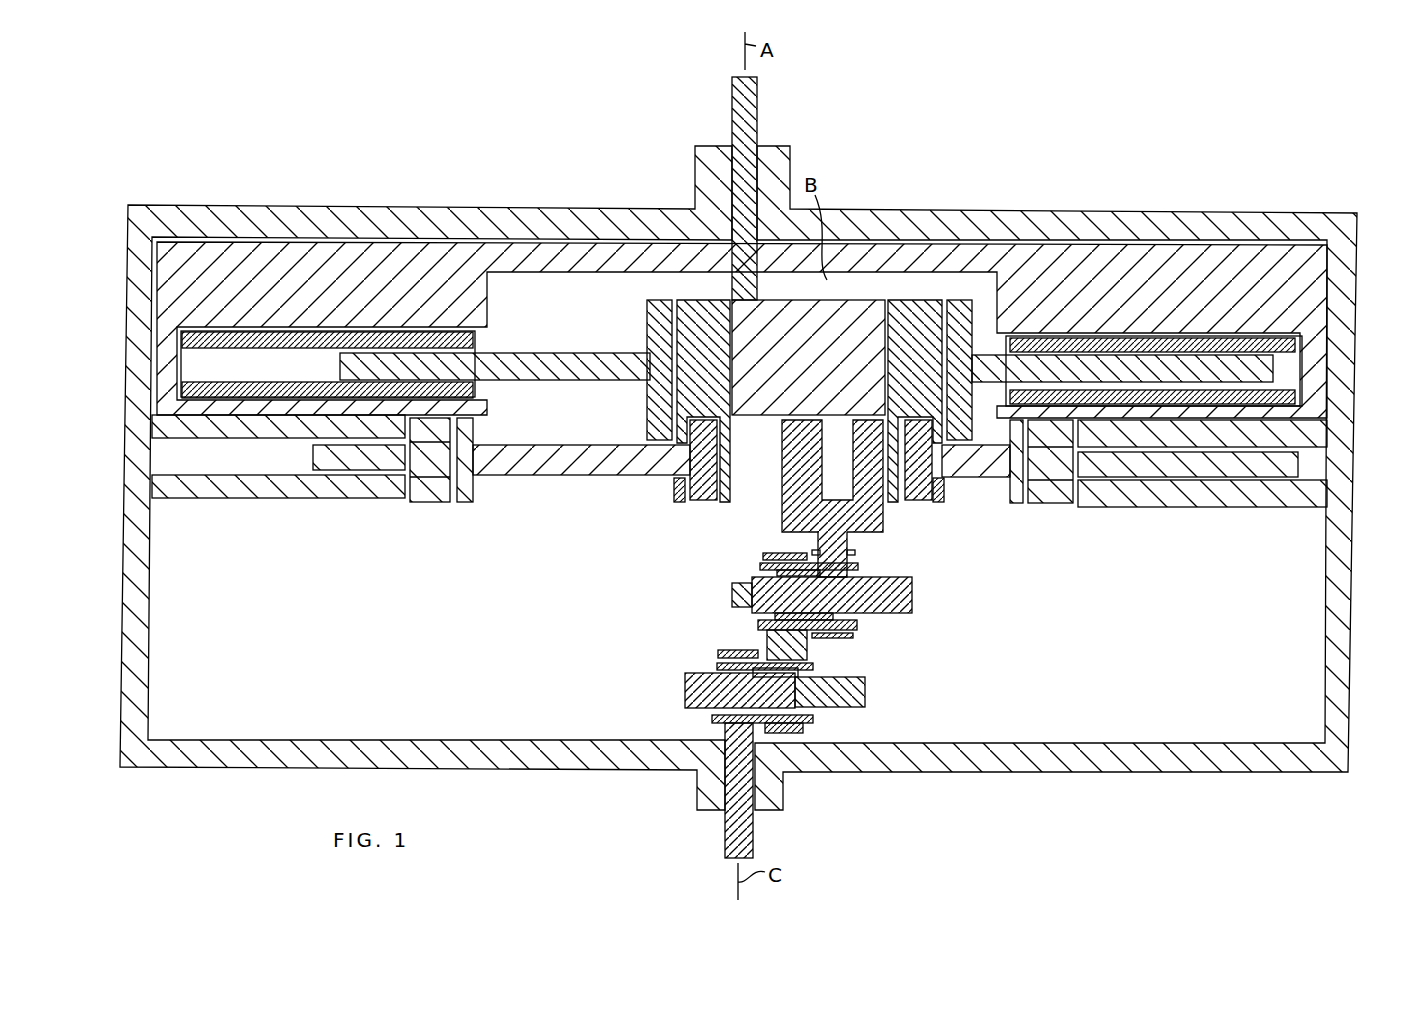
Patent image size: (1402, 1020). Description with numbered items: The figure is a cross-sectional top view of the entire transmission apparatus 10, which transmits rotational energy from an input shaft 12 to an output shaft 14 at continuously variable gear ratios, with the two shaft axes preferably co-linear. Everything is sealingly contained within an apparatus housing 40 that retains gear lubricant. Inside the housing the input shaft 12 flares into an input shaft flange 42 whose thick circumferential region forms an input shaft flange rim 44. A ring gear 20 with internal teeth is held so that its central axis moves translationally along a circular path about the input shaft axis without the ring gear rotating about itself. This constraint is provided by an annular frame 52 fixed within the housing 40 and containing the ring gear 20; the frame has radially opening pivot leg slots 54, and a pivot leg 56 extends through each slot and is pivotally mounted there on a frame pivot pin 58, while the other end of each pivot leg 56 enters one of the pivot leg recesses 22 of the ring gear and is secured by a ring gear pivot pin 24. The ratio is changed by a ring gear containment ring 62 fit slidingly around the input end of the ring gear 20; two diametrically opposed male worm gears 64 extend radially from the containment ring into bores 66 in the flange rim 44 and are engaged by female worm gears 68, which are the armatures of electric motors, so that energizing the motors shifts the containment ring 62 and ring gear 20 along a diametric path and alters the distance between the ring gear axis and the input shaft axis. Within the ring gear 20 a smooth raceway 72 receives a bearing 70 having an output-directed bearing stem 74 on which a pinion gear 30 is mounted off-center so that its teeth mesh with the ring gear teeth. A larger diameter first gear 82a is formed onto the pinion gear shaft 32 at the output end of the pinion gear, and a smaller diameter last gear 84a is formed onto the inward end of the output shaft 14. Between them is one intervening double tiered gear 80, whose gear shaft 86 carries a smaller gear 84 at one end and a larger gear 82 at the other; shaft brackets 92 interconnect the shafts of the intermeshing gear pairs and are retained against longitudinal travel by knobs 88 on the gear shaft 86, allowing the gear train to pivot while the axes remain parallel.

The transmission apparatus 10 is at (1212, 146).
The input shaft 12 is at (757, 100).
The output shaft 14 is at (753, 832).
The ring gear 20 is at (715, 302).
The pivot leg recesses 22 is at (687, 502).
The ring gear pivot pin 24 is at (710, 500).
The pinion gear 30 is at (858, 528).
The pinion gear shaft 32 is at (818, 538).
The apparatus housing 40 is at (1076, 800).
The input shaft flange 42 is at (742, 294).
The input shaft flange rim 44 is at (296, 293).
The annular frame 52 is at (300, 499).
The pivot leg slots 54 is at (461, 502).
The pivot leg 56 is at (583, 471).
The frame pivot pin 58 is at (426, 502).
The ring gear containment ring 62 is at (652, 312).
The male worm gears 64 is at (578, 380).
The bores 66 is at (225, 378).
The female worm gears 68 is at (307, 392).
The bearing 70 is at (816, 302).
The smooth raceway 72 is at (884, 300).
The bearing stem 74 is at (828, 438).
The double tiered gears 80 is at (808, 648).
The larger diameter gears 82 is at (865, 692).
The first gear 82a is at (858, 595).
The smaller diameter gears 84 is at (732, 597).
The last gear 84a is at (686, 688).
The gear shaft 86 is at (765, 645).
The knobs 88 is at (855, 551).
The shaft brackets 92 is at (762, 566).